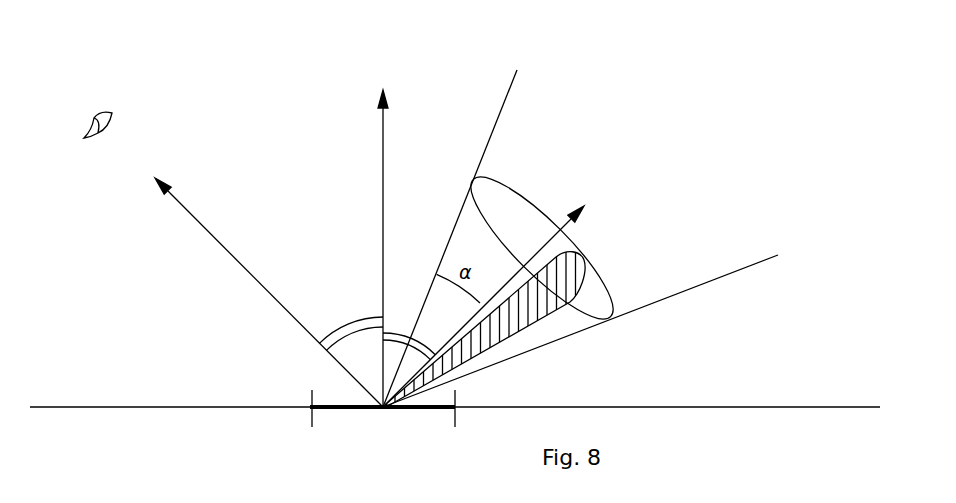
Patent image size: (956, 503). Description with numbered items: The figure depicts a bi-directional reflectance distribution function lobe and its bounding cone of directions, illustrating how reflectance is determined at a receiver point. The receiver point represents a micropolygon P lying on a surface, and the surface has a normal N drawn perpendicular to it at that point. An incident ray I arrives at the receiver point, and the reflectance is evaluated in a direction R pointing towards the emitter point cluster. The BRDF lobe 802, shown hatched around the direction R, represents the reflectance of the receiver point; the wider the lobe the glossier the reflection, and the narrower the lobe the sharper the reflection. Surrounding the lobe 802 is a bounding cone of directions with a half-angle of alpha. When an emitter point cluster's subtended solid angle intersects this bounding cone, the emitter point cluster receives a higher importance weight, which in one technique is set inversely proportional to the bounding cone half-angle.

The BRDF lobe 802 is at (490, 340).
The normal N is at (362, 248).
The incident light ray I is at (257, 273).
The direction towards the emitter point cluster R is at (502, 288).
The micropolygon P is at (382, 426).